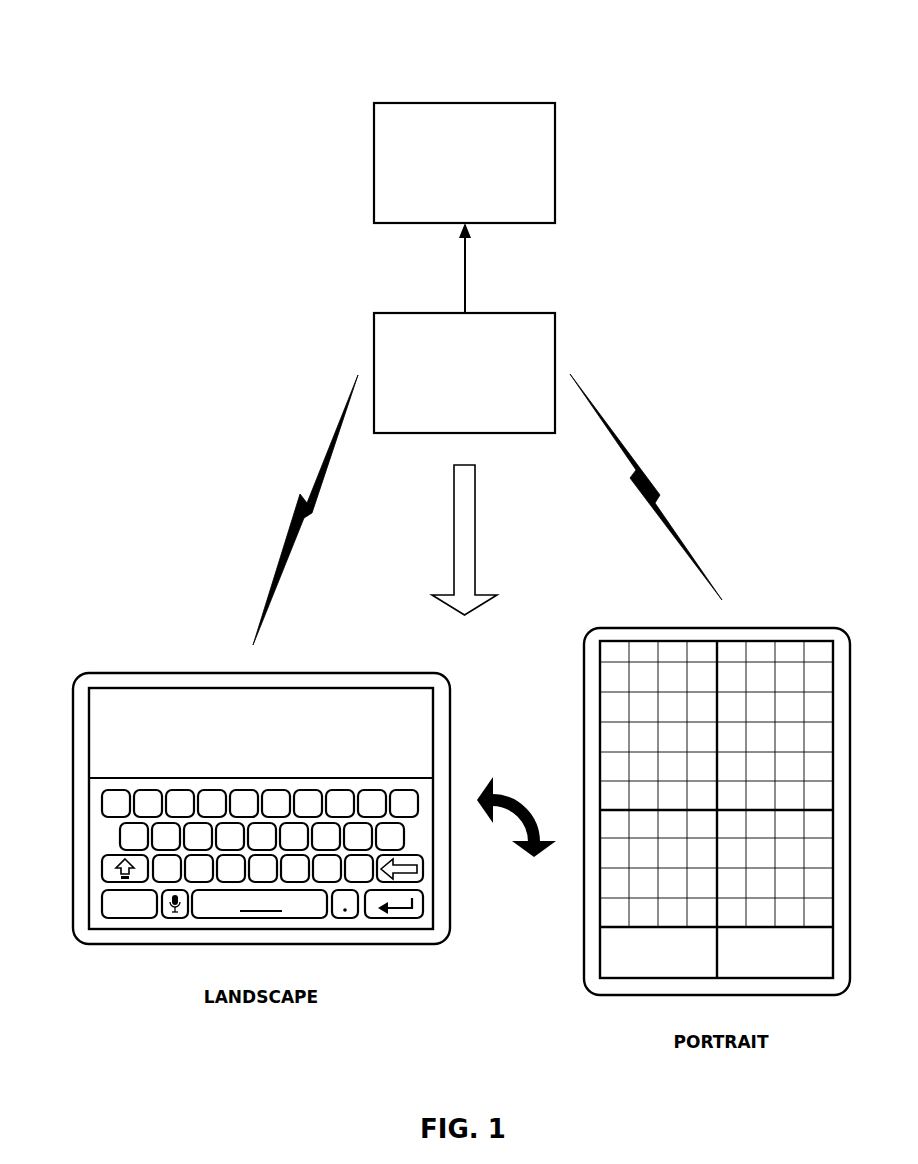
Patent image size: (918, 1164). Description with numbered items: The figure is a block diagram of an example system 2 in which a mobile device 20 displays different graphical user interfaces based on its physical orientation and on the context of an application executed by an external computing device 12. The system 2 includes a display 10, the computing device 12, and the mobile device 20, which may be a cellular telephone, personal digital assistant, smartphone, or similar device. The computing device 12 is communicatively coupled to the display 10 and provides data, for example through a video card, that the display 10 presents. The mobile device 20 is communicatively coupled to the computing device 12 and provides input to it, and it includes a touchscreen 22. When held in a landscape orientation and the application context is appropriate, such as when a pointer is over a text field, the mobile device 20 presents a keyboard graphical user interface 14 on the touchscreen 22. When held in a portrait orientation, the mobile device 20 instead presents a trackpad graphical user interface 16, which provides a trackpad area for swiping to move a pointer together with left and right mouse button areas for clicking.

The system 2 is at (679, 48).
The display 10 is at (464, 163).
The computing device 12 is at (464, 373).
The keyboard graphical user interface 14 is at (346, 724).
The trackpad graphical user interface 16 is at (741, 697).
The mobile device 20 is at (125, 672).
The touchscreen 22 is at (305, 688).